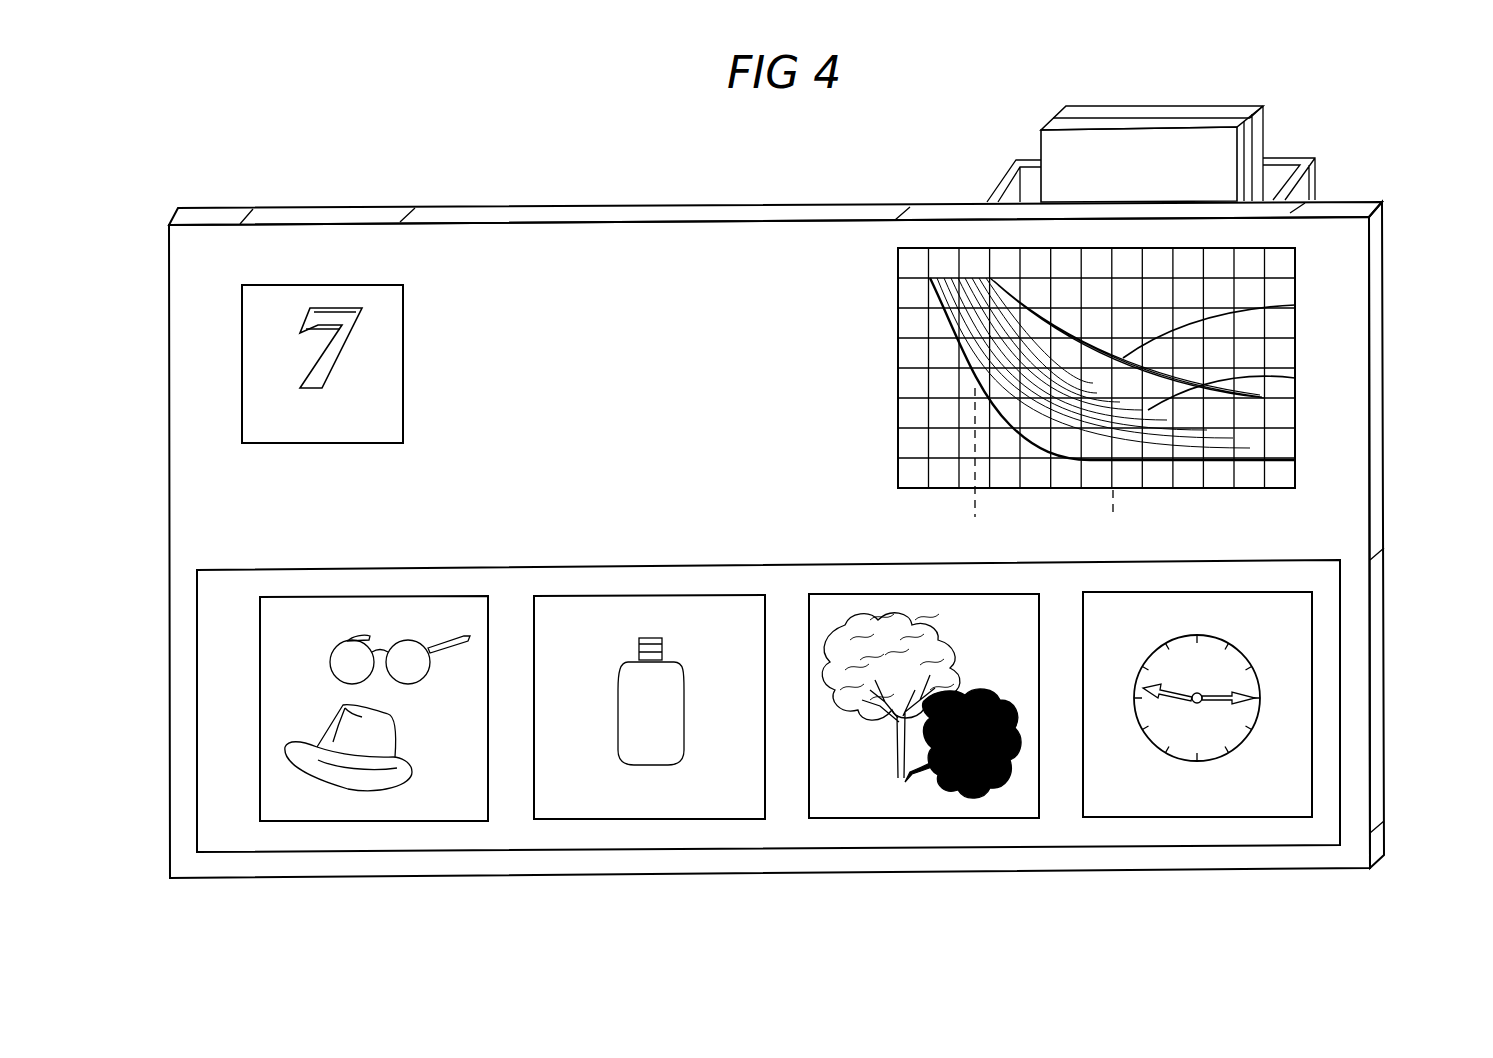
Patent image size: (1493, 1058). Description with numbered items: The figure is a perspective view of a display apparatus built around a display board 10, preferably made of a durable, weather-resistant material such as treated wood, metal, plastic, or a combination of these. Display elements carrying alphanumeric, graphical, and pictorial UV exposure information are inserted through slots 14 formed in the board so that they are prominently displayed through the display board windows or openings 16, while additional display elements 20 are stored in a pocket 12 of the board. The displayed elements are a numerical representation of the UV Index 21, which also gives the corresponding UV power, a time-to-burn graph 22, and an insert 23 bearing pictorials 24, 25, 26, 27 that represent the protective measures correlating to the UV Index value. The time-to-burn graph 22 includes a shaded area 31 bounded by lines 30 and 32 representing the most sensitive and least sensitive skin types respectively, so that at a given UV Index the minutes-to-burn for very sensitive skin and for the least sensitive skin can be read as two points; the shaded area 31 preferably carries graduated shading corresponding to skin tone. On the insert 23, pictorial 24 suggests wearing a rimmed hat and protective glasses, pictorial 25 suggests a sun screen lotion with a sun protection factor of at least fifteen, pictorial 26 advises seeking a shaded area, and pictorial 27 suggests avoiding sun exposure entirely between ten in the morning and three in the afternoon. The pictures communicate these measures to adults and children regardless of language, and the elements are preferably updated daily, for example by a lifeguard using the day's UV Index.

The display board 10 is at (625, 222).
The pocket 12 is at (1303, 187).
The slots 14 is at (318, 217).
The display board windows 16 is at (240, 408).
The additional display elements 20 is at (1166, 87).
The UV Index display element 21 is at (368, 374).
The time-to-burn graph 22 is at (1092, 386).
The insert 23 is at (569, 517).
The pictorial 24 is at (358, 608).
The pictorial 25 is at (632, 610).
The pictorial 26 is at (940, 607).
The pictorial 27 is at (1257, 613).
The line 30 is at (1013, 427).
The shaded area 31 is at (1290, 377).
The line 32 is at (1295, 305).